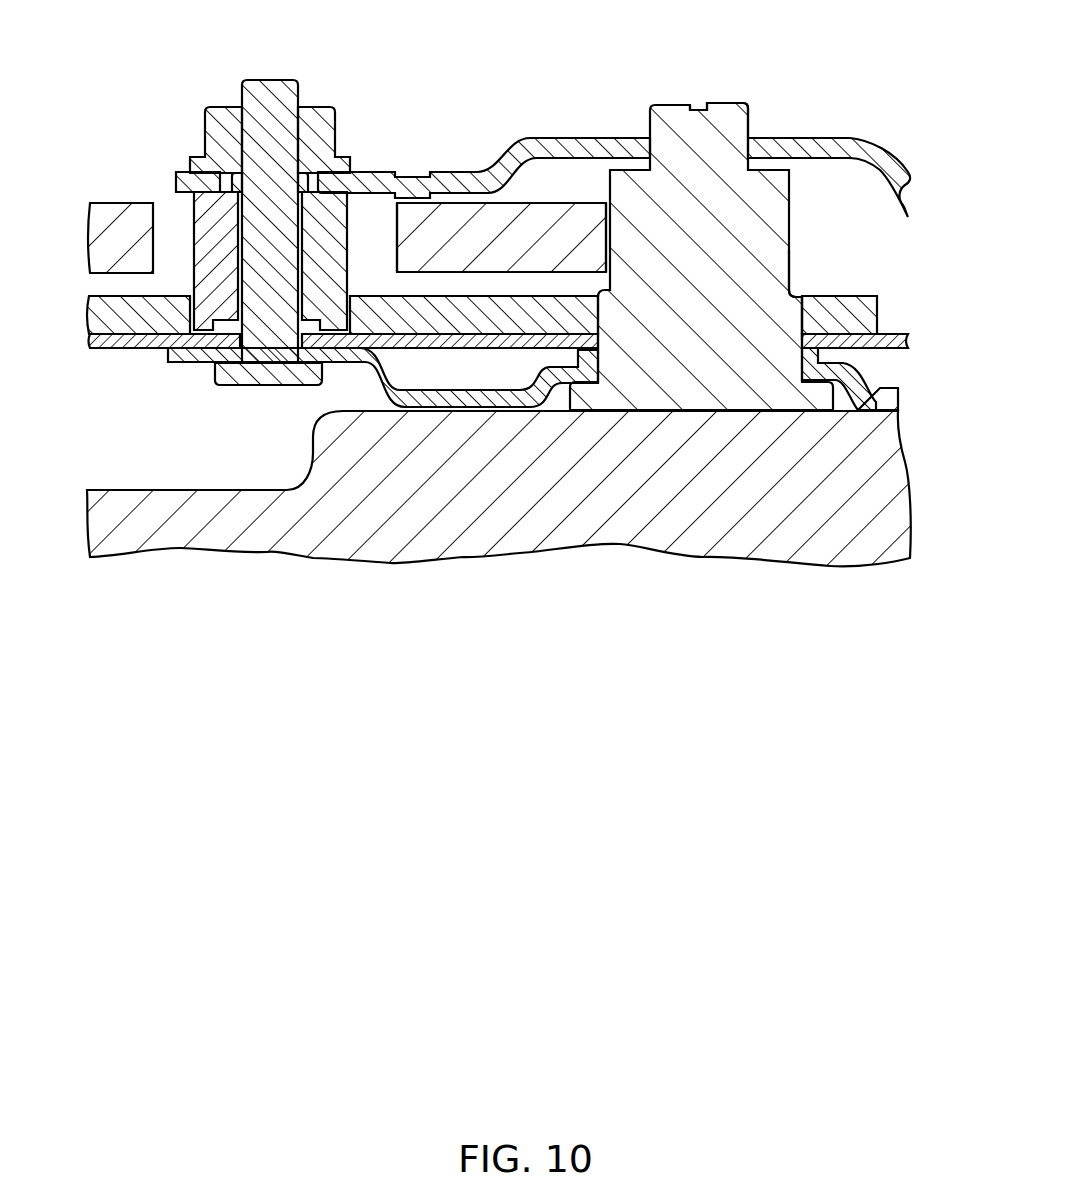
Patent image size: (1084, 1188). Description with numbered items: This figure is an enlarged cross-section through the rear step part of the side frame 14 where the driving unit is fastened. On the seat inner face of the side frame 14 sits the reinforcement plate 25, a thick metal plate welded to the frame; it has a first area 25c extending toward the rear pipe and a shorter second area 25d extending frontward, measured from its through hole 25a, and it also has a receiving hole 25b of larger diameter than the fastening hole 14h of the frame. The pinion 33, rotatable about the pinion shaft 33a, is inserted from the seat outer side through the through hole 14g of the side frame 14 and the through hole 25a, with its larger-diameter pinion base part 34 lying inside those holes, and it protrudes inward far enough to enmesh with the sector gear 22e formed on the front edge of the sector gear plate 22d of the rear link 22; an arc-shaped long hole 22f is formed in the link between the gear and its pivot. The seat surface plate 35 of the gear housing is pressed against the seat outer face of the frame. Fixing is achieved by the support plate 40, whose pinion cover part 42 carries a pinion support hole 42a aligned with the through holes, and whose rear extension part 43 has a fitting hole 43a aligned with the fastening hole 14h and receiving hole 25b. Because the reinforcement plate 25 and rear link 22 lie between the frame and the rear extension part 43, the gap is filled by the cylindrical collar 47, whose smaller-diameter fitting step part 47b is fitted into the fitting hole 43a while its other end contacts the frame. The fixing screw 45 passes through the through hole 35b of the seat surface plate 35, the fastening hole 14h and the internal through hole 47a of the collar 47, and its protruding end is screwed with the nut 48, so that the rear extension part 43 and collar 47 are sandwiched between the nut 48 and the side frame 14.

The side frame 14 is at (494, 473).
The through hole 14g is at (800, 330).
The fastening hole 14h is at (240, 340).
The rear link 22 is at (523, 162).
The sector gear plate 22d is at (490, 223).
The sector gear 22e is at (607, 223).
The arc-shaped long hole 22f is at (393, 227).
The reinforcement plate 25 is at (502, 401).
The through hole 25a is at (793, 303).
The receiving hole 25b is at (195, 317).
The first area 25c is at (417, 315).
The second area 25d is at (877, 294).
The pinion 33 is at (719, 212).
The pinion shaft 33a is at (727, 118).
The pinion base part 34 is at (765, 307).
The seat surface plate 35 is at (522, 457).
The through hole 35b is at (300, 353).
The support plate 40 is at (855, 140).
The pinion cover part 42 is at (807, 145).
The pinion support hole 42a is at (655, 147).
The rear extension part 43 is at (363, 173).
The fitting hole 43a is at (227, 183).
The fixing screw 45 is at (270, 92).
The collar 47 is at (207, 210).
The internal through hole 47a is at (243, 256).
The fitting step part 47b is at (317, 183).
The nut 48 is at (223, 110).